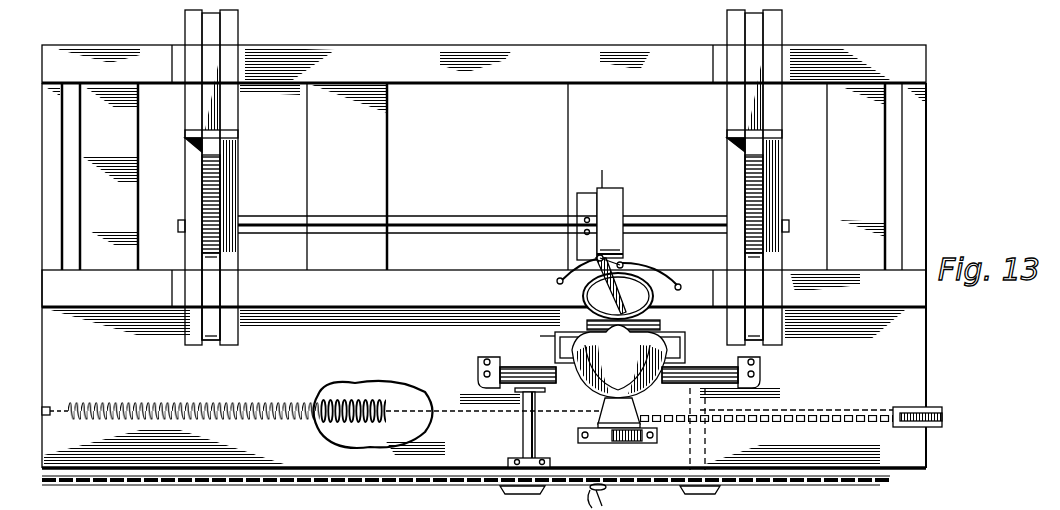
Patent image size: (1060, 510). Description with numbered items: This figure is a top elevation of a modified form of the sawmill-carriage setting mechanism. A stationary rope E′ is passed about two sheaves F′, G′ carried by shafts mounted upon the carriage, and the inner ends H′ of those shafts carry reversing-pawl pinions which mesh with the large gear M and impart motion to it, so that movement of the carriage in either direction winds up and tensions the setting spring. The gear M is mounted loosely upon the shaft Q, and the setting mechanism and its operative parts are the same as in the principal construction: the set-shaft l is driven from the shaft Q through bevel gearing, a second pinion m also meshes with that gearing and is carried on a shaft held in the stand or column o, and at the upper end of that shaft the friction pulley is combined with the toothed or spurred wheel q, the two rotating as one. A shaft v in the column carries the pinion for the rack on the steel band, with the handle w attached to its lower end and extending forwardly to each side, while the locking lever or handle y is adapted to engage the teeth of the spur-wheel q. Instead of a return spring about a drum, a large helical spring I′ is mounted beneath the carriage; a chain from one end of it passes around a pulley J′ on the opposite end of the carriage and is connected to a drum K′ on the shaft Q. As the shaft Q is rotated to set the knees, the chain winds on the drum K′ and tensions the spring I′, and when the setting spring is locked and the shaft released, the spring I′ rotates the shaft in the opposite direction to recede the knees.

The set-shaft l is at (487, 216).
The stand or column o is at (623, 207).
The second pinion m is at (626, 248).
The toothed or spurred wheel q is at (652, 270).
The handle w is at (556, 281).
The dial z is at (618, 296).
The shaft v is at (544, 331).
The frame d is at (684, 335).
The inner ends of sheave shafts H′ is at (512, 370).
The large gear M is at (616, 366).
The drum K′ is at (597, 420).
The shaft Q is at (618, 443).
The sheave F′ is at (498, 492).
The sheave G′ is at (680, 494).
The locking lever or handle y is at (588, 496).
The stationary rope E′ is at (847, 493).
The pulley J′ is at (794, 422).
The large helical spring I′ is at (321, 414).